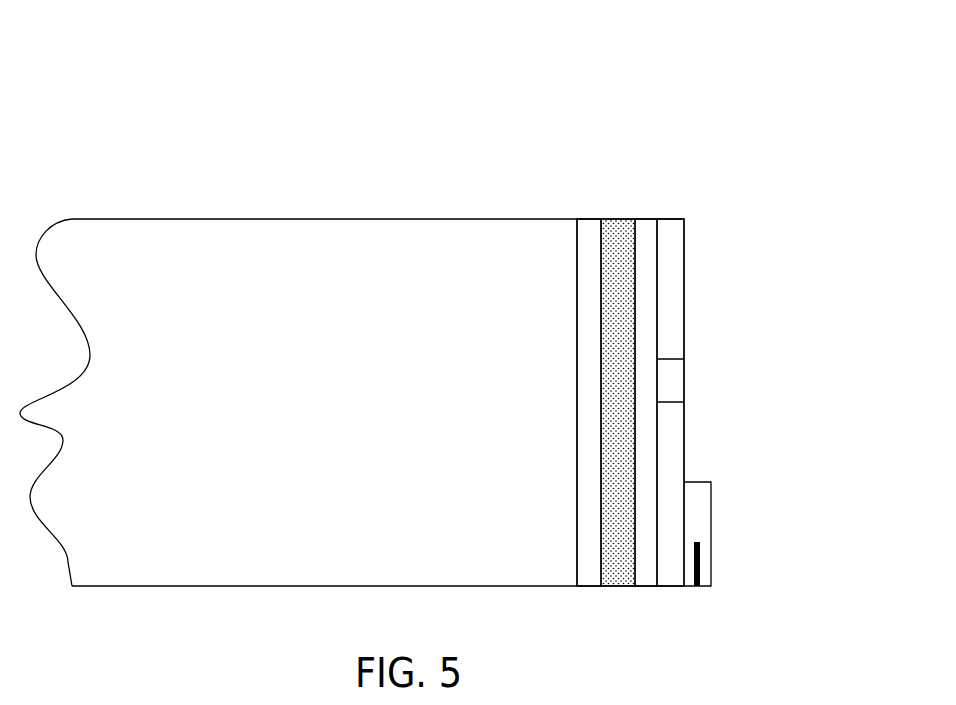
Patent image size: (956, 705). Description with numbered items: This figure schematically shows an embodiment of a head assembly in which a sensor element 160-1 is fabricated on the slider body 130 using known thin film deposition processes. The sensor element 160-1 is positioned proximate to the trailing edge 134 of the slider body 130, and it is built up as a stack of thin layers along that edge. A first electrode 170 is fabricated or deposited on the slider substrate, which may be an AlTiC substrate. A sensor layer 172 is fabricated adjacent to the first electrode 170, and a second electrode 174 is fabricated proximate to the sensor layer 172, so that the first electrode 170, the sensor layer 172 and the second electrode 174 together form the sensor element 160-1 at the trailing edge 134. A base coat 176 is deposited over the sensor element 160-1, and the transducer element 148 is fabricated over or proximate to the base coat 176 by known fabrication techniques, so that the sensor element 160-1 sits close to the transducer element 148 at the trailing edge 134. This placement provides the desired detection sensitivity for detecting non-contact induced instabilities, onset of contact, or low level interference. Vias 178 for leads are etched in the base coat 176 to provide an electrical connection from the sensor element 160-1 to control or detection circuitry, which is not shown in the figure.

The slider body 130 is at (244, 303).
The sensor element 160-1 is at (642, 108).
The first electrode 170 is at (591, 218).
The sensor layer 172 is at (618, 218).
The second electrode 174 is at (645, 218).
The trailing edge 134 is at (830, 390).
The vias 178 is at (684, 375).
The base coat 176 is at (684, 457).
The transducer element 148 is at (700, 575).